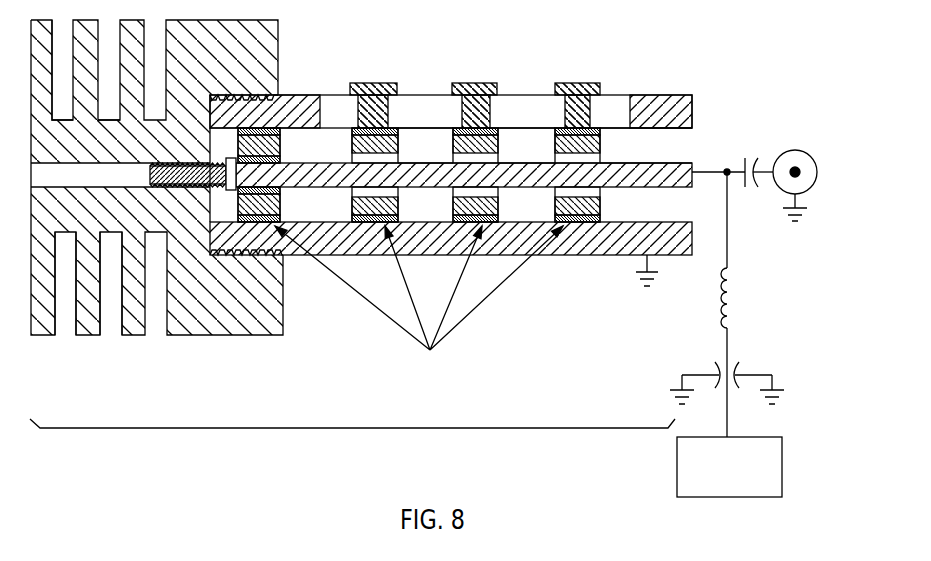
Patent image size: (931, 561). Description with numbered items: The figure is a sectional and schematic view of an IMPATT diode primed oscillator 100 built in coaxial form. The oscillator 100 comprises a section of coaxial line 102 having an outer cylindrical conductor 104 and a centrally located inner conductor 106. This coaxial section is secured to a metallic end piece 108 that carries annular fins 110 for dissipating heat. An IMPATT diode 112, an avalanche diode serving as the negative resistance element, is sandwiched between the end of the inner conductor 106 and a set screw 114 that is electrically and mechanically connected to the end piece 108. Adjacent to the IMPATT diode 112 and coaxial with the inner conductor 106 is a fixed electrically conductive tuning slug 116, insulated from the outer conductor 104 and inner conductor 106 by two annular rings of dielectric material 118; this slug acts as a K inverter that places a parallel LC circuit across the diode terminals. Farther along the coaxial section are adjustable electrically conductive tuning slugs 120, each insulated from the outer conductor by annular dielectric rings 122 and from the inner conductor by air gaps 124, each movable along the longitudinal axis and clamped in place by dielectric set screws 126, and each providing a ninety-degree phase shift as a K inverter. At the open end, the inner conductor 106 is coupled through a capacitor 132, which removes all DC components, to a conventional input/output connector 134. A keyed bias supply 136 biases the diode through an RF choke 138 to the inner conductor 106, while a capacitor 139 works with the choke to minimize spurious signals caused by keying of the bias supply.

The oscillator 100 is at (369, 428).
The section of coaxial line 102 is at (484, 189).
The outer cylindrical conductor 104 is at (692, 113).
The inner conductor 106 is at (693, 170).
The metallic end piece 108 is at (280, 22).
The annular fins 110 is at (44, 341).
The IMPATT diode 112 is at (237, 158).
The set screw 114 is at (149, 166).
The fixed electrically conductive tuning slug 116 is at (312, 205).
The annular rings of dielectric material 118 is at (282, 134).
The adjustable electrically conductive tuning slugs 120 is at (618, 144).
The annular rings of dielectric material 122 is at (610, 214).
The air gaps 124 is at (601, 184).
The dielectric set screws 126 is at (600, 86).
The capacitor 132 is at (750, 157).
The input/output connector 134 is at (819, 178).
The keyed bias supply 136 is at (783, 470).
The RF choke 138 is at (731, 305).
The capacitor 139 is at (745, 369).